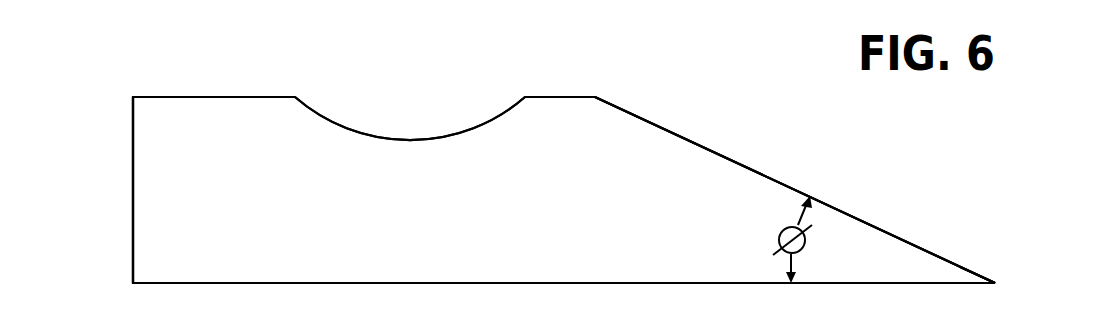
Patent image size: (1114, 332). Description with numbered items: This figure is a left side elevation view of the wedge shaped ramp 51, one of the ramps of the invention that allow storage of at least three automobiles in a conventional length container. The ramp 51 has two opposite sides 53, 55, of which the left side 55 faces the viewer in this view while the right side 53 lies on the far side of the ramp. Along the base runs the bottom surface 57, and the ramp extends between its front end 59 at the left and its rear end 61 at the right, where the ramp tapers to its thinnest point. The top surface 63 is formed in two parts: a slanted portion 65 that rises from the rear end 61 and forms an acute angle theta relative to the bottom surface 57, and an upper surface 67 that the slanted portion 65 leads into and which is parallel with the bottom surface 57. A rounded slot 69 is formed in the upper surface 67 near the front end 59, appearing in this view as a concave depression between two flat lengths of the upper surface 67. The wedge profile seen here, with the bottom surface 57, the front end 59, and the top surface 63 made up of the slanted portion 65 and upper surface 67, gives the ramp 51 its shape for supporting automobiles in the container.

The wedge shaped ramp 51 is at (845, 171).
The right side 53 is at (870, 331).
The left side 55 is at (187, 160).
The bottom surface 57 is at (724, 284).
The front end 59 is at (133, 228).
The rear end 61 is at (1022, 283).
The top surface 63 is at (720, 98).
The slanted portion 65 is at (867, 222).
The upper surface 67 is at (230, 97).
The rounded slot 69 is at (432, 135).